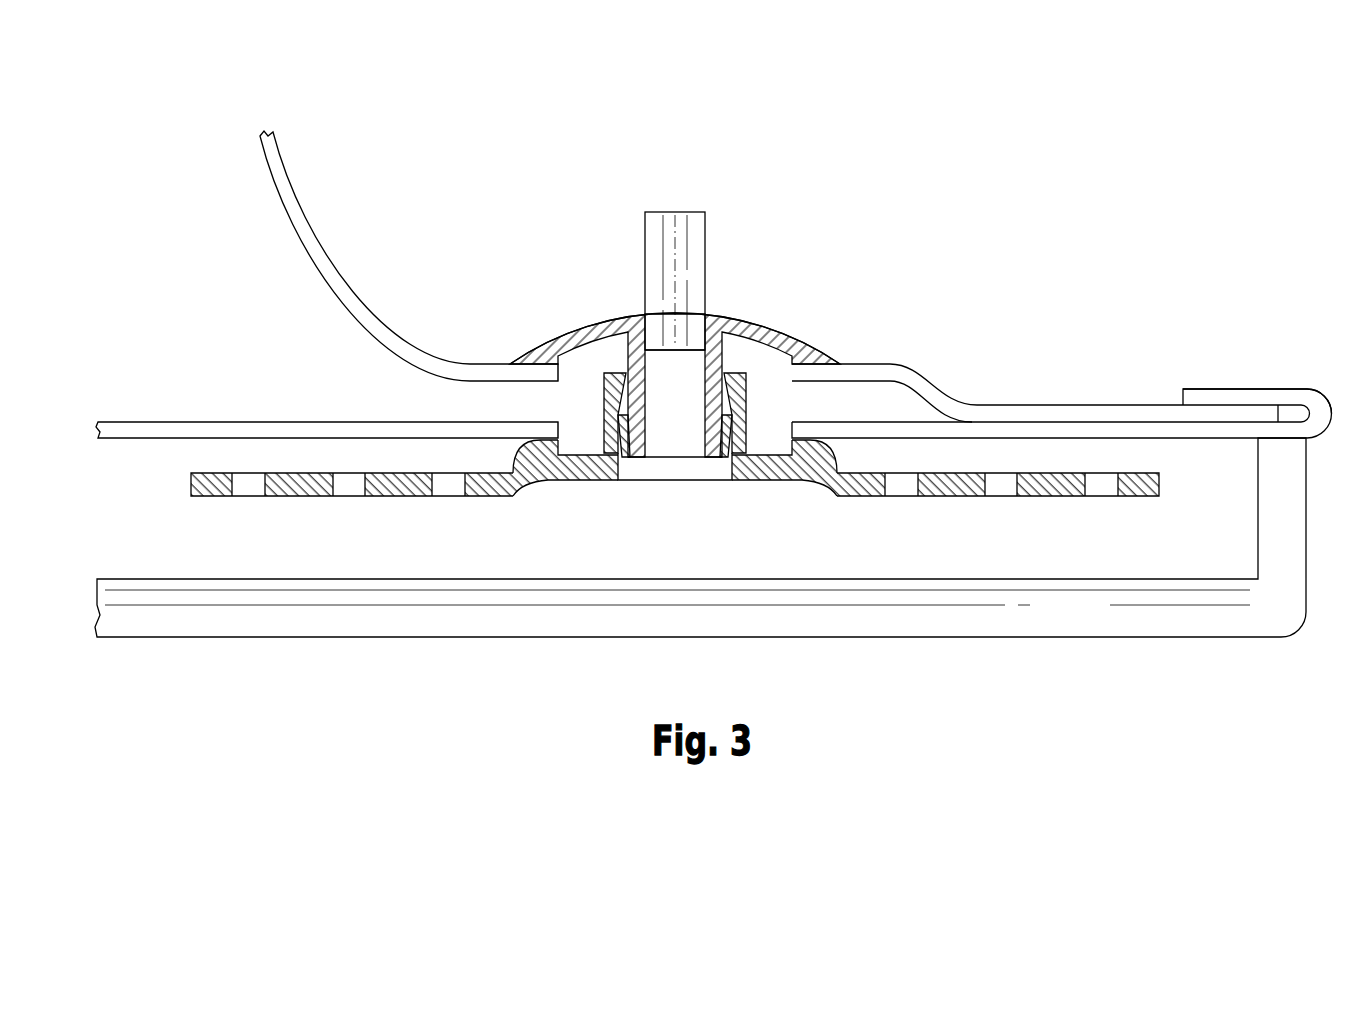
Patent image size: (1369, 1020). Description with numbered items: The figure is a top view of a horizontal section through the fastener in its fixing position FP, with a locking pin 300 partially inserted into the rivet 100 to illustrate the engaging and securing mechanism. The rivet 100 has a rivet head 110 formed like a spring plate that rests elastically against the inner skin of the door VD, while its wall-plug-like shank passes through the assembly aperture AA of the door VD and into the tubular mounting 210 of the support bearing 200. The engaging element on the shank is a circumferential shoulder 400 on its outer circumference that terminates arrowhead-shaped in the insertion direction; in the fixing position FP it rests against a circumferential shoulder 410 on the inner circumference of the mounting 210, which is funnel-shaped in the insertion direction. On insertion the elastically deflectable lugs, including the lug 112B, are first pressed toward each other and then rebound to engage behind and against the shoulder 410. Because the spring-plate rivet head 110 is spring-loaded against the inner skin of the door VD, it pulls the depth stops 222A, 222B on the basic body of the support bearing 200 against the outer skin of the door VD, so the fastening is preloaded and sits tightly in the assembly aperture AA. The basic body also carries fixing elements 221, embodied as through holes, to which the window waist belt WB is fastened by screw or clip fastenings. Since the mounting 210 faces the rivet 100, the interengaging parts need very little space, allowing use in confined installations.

The rivet 100 is at (680, 394).
The rivet head 110 is at (580, 338).
The lug 112B is at (683, 440).
The locking pin 300 is at (673, 245).
The circumferential shoulder 410 is at (724, 413).
The circumferential shoulder 400 is at (636, 458).
The tubular mounting 210 is at (667, 467).
The support bearing 200 is at (598, 498).
The fixing elements 221 is at (175, 480).
The depth stop 222A is at (525, 488).
The depth stop 222B is at (845, 482).
The door VD is at (1232, 400).
The window waist belt WB is at (1280, 587).
The assembly aperture AA is at (598, 416).
The fixing position FP is at (693, 416).